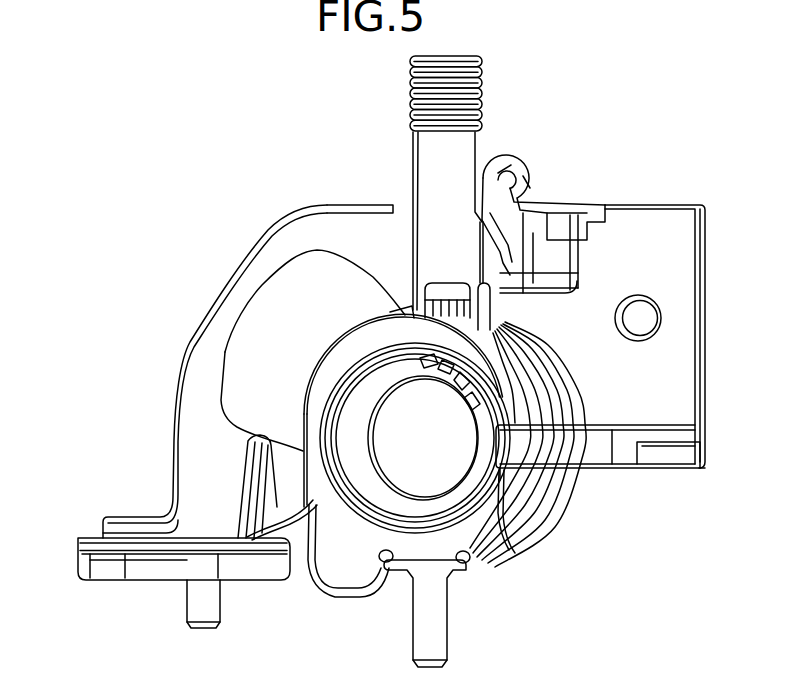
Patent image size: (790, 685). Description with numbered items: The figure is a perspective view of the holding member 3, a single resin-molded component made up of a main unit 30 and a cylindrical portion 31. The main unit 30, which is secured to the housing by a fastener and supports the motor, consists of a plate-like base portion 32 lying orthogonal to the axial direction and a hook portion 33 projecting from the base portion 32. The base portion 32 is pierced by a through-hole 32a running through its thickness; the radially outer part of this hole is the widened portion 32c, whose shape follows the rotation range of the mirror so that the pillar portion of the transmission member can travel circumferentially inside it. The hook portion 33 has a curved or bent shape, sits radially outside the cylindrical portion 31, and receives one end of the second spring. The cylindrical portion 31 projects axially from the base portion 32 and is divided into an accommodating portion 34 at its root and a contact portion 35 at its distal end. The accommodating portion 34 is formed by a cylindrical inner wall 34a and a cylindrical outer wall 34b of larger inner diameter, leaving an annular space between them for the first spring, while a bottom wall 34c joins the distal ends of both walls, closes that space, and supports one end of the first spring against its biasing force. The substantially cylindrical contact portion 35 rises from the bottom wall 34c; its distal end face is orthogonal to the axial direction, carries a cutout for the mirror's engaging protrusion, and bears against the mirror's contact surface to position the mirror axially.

The holding member 3 is at (110, 132).
The main unit 30 is at (660, 200).
The cylindrical portion 31 is at (375, 145).
The base portion 32 is at (247, 283).
The through-hole 32a is at (637, 305).
The widened portion 32c is at (236, 383).
The hook portion 33 is at (494, 170).
The accommodating portion 34 is at (383, 315).
The inner wall 34a is at (543, 523).
The outer wall 34b is at (343, 433).
The bottom wall 34c is at (520, 480).
The contact portion 35 is at (355, 360).